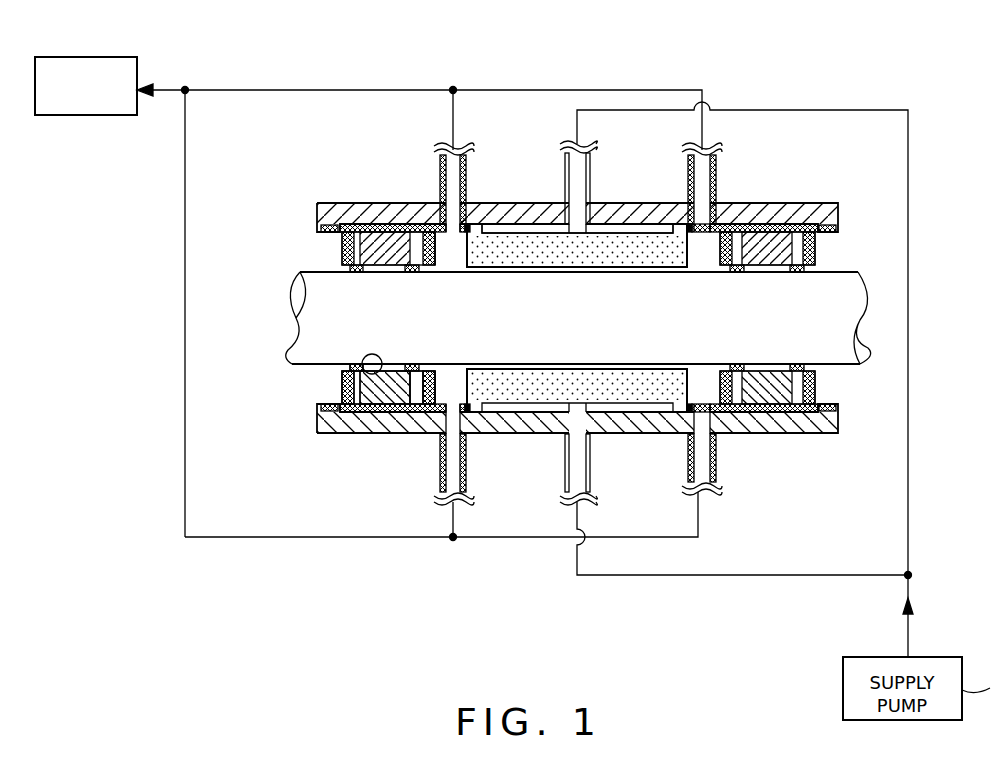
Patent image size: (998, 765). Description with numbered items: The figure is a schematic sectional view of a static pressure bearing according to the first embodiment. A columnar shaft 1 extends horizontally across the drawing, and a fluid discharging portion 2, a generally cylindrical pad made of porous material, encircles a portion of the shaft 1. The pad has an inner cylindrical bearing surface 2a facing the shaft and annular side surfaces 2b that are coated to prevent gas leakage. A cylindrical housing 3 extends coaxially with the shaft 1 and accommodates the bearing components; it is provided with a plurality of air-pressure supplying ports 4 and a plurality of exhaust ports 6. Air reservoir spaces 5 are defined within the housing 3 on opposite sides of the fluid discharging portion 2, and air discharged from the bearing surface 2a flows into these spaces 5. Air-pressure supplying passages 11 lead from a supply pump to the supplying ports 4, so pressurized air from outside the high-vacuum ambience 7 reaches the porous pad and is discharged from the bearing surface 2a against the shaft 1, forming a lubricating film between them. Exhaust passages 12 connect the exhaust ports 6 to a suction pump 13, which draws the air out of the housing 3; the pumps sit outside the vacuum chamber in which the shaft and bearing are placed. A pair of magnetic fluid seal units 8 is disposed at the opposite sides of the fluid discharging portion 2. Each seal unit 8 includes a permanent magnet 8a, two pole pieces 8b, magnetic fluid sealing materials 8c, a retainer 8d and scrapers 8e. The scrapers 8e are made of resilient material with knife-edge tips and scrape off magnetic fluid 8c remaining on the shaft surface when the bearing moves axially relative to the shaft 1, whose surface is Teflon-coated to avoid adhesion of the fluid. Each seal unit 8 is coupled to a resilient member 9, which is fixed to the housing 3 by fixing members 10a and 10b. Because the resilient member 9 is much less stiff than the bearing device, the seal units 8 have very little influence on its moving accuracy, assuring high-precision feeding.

The columnar shaft 1 is at (855, 290).
The fluid discharging portion 2 is at (594, 291).
The inner cylindrical bearing surface 2a is at (595, 268).
The annular side surfaces 2b is at (688, 262).
The cylindrical housing 3 is at (792, 212).
The air-pressure supplying ports 4 is at (577, 215).
The air reservoir spaces 5 is at (455, 258).
The exhaust ports 6 is at (455, 205).
The high-vacuum ambience 7 is at (305, 247).
The magnetic fluid seal unit 8 is at (542, 425).
The permanent magnet 8a is at (390, 395).
The pole pieces 8b is at (412, 404).
The magnetic fluid sealing materials 8c is at (365, 400).
The retainer 8d is at (437, 395).
The scrapers 8e is at (352, 395).
The resilient member 9 is at (356, 224).
The fixing member 10a is at (330, 222).
The fixing member 10b is at (437, 222).
The air-pressure supplying passages 11 is at (678, 578).
The exhaust passages 12 is at (402, 88).
The suction pump 13 is at (128, 57).